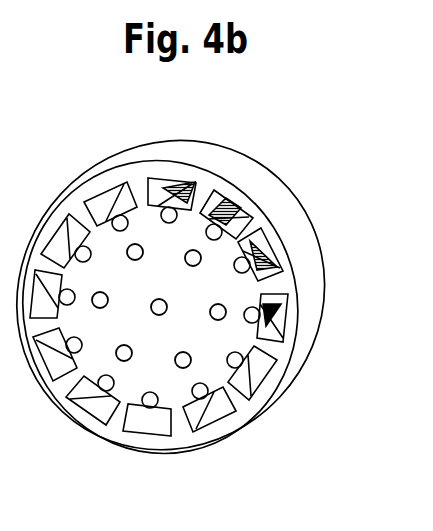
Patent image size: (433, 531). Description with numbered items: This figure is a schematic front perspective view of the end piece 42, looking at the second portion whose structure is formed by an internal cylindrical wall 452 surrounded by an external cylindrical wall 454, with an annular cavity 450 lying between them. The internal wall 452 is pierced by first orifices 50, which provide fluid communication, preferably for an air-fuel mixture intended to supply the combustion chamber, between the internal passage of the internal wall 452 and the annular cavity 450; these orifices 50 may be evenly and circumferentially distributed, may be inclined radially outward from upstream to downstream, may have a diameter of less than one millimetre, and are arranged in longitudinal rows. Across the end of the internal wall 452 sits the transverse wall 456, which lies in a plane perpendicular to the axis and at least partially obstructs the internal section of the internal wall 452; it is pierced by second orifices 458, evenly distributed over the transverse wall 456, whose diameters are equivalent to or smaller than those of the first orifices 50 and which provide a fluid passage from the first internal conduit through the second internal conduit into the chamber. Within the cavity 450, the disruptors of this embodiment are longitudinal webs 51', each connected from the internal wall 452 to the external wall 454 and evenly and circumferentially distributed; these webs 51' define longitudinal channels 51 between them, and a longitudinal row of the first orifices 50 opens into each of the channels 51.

The end piece 42 is at (322, 178).
The orifices 50 is at (217, 205).
The longitudinal channels 51 is at (273, 402).
The longitudinal webs 51' is at (308, 318).
The annular cavity 450 is at (222, 427).
The internal cylindrical wall 452 is at (245, 212).
The external cylindrical wall 454 is at (300, 238).
The transverse wall 456 is at (126, 378).
The second orifices 458 is at (117, 354).